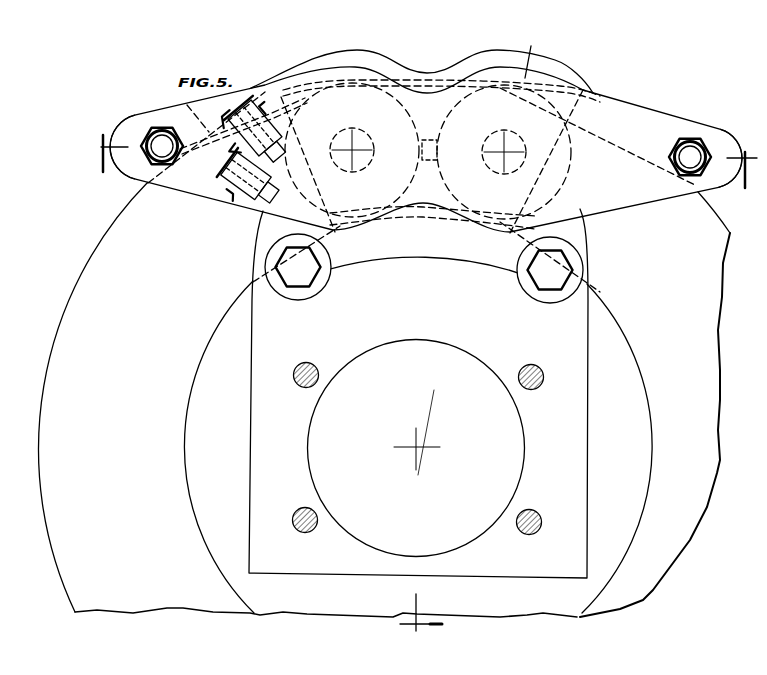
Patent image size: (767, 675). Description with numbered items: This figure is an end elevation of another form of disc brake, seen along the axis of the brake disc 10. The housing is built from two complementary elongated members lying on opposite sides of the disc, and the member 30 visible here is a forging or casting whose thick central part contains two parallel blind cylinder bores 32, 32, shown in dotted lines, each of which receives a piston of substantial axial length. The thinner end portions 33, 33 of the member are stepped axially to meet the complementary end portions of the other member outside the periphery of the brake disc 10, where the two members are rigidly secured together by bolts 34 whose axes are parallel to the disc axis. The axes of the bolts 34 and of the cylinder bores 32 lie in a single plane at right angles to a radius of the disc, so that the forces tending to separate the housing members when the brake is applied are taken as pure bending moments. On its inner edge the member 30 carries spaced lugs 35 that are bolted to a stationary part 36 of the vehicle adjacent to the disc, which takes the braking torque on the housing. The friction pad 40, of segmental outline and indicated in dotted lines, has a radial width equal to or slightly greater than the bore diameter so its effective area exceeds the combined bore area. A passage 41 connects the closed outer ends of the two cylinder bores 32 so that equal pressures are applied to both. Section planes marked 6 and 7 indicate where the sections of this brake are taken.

The brake disc 10 is at (76, 435).
The housing member 30 is at (648, 117).
The cylinder bore 32 is at (378, 97).
The end portion 33 is at (147, 120).
The bolt 34 is at (698, 116).
The lug 35 is at (424, 262).
The stationary part 36 is at (580, 332).
The friction pad 40 is at (603, 122).
The passage 41 is at (427, 140).
The section line 6- 6 is at (460, 337).
The section line 7- 7 is at (428, 153).